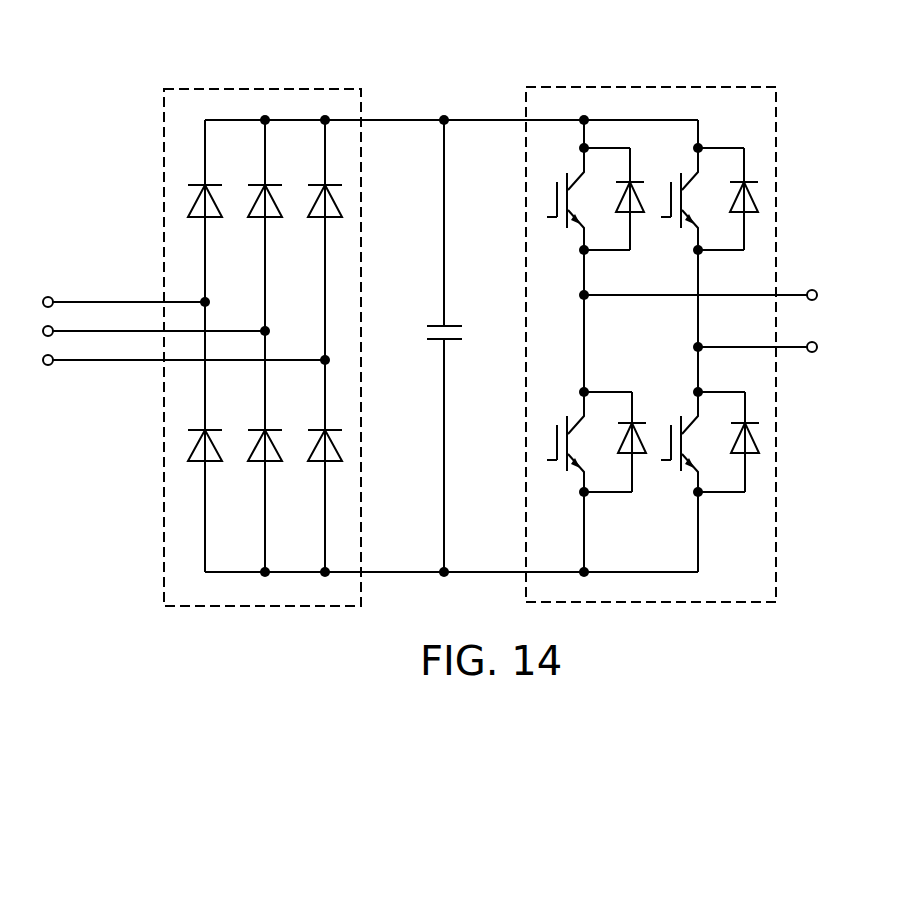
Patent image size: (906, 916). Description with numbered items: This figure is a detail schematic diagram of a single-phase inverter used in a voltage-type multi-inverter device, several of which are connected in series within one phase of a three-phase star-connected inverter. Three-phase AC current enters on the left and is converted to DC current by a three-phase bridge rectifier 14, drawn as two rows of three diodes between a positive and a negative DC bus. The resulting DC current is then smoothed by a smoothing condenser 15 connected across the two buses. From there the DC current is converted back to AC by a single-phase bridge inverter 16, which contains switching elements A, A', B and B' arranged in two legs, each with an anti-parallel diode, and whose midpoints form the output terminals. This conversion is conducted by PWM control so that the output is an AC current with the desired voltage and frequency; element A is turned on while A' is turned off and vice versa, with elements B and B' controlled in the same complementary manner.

The 3-phase bridge rectifier 14 is at (283, 88).
The smoothing condenser 15 is at (450, 325).
The single-phase bridge inverter 16 is at (710, 87).